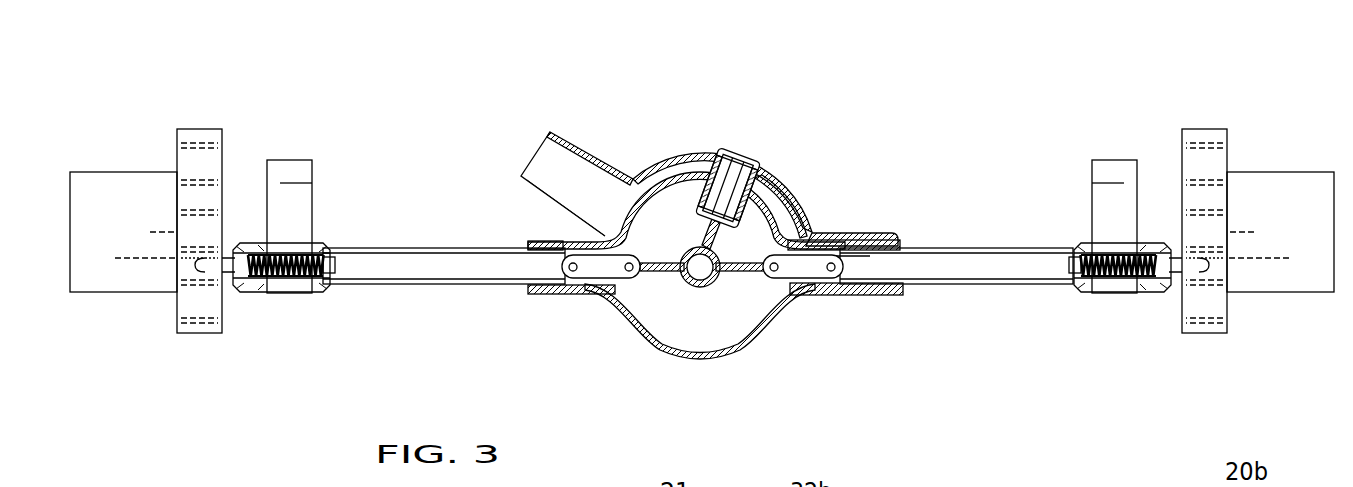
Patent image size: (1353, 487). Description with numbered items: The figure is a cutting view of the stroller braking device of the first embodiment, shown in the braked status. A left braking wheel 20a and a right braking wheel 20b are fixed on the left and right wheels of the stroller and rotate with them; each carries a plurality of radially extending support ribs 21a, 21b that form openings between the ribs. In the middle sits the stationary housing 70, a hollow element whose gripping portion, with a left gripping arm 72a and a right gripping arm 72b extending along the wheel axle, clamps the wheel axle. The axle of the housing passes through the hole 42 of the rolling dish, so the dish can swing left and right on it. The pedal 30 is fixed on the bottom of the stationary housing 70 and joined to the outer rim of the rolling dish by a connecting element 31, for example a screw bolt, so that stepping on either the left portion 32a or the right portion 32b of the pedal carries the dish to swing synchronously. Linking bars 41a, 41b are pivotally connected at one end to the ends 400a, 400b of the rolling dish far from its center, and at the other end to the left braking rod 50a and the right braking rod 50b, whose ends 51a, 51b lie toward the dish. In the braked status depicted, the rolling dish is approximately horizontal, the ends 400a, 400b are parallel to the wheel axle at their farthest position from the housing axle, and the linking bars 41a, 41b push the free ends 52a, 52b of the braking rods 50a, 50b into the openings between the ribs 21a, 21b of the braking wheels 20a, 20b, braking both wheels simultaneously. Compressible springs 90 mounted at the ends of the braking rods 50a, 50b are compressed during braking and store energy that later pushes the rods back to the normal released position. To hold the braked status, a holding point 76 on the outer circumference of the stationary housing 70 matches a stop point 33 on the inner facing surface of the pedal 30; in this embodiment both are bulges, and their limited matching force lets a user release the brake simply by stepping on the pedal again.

The left braking wheel 20a is at (195, 333).
The right braking wheel 20b is at (1203, 182).
The support ribs 21a is at (207, 128).
The right wheel flange 21b is at (1197, 128).
The pedal 30 is at (688, 150).
The connecting element 31 is at (736, 150).
The left portion of the pedal 32a is at (596, 150).
The right portion of the pedal 32b is at (897, 238).
The stop point 33 is at (785, 195).
The end of the rolling dish 400a is at (648, 288).
The end of the rolling dish 400b is at (792, 232).
The linking bar 41a is at (607, 272).
The linking bar 41b is at (812, 300).
The hole 42 is at (713, 280).
The left braking rod 50a is at (410, 263).
The right braking rod 50b is at (968, 262).
The end of the braking rod 51a is at (556, 246).
The end of the braking rod 51b is at (848, 245).
The free end of the left braking rod 52a is at (208, 272).
The free end of the right braking rod 52b is at (1196, 272).
The stationary housing 70 is at (767, 337).
The left gripping arm 72a is at (562, 294).
The right gripping arm 72b is at (832, 296).
The holding point 76 is at (752, 168).
The compressible spring 90 is at (296, 284).